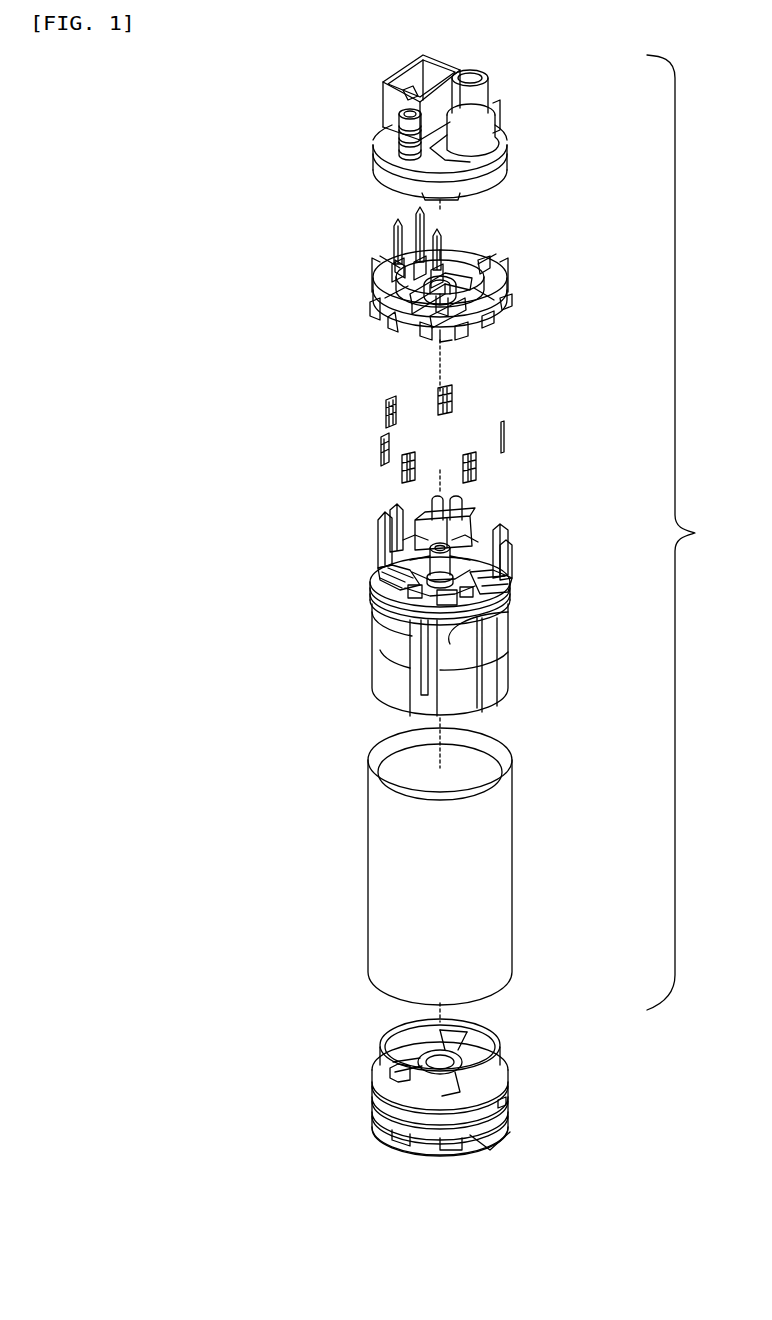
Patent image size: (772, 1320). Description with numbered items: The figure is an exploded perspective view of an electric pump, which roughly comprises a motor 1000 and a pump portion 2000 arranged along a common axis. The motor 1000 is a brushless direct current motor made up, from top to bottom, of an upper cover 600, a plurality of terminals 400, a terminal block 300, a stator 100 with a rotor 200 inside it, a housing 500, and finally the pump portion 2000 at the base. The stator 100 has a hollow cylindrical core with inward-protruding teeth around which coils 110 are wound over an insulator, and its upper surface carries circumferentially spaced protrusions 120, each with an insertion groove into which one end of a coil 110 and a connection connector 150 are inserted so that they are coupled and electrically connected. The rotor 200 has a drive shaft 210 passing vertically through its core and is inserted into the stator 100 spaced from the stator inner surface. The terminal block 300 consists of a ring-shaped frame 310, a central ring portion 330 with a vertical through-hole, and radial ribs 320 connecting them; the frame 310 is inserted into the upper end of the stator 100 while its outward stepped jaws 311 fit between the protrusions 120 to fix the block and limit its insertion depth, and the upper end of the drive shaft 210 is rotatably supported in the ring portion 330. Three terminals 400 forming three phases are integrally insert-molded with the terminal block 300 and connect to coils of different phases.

The motor 1000 is at (699, 532).
The upper cover 600 is at (506, 135).
The terminals 400 is at (414, 236).
The terminal block 300 is at (477, 289).
The frame 310 is at (476, 262).
The stepped jaws 311 is at (510, 300).
The ribs 320 is at (462, 256).
The ring portion 330 is at (470, 330).
The connection connector 150 is at (454, 394).
The protrusions 120 is at (462, 495).
The coils 110 is at (468, 520).
The rotor 200 is at (378, 550).
The drive shaft 210 is at (378, 590).
The stator 100 is at (463, 601).
The housing 500 is at (512, 868).
The pump portion 2000 is at (518, 1088).